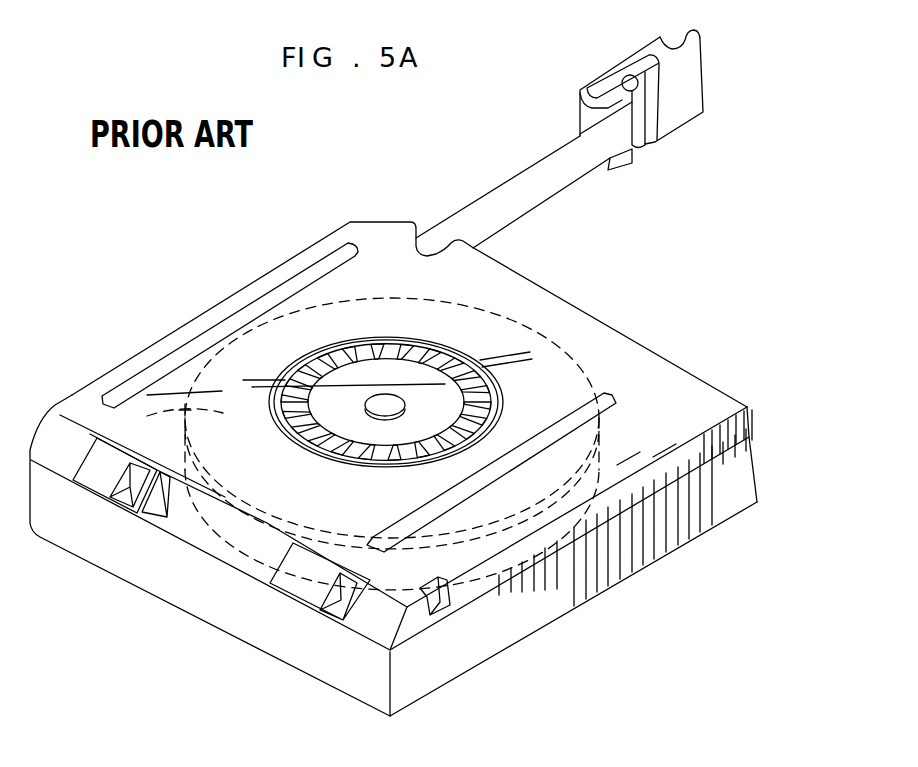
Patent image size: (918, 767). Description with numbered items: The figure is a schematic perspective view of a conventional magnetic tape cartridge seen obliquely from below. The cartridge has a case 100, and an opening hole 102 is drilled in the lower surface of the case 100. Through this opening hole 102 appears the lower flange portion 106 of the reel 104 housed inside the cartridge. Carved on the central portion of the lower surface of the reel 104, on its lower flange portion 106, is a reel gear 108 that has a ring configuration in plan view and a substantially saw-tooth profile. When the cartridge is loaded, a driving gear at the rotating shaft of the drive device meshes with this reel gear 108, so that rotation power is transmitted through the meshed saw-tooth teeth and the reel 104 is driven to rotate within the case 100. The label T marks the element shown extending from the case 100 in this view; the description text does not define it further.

The case 100 is at (656, 348).
The opening hole 102 is at (375, 338).
The reel 104 is at (337, 397).
The lower flange portion 106 is at (261, 518).
The reel gear 108 is at (468, 378).
The terminal tab T is at (518, 194).